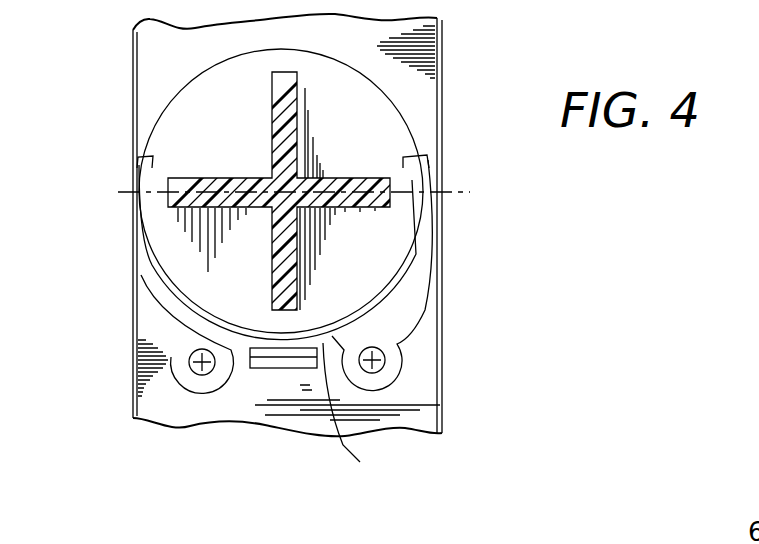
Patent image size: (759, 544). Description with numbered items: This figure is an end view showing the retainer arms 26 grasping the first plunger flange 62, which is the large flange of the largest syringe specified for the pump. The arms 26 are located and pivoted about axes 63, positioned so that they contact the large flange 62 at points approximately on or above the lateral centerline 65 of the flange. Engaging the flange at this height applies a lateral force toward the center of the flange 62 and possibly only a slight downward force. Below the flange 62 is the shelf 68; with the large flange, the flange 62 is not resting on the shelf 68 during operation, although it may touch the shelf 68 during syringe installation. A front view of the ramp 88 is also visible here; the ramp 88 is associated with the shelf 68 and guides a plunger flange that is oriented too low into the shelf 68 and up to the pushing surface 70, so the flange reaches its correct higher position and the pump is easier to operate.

The pushing surface 70 is at (441, 30).
The first plunger flange 62 is at (423, 102).
The lateral centerline 65 is at (138, 162).
The arms 26 is at (423, 223).
The axes 63 is at (185, 370).
The ramp 88 is at (293, 363).
The shelf 68 is at (343, 445).